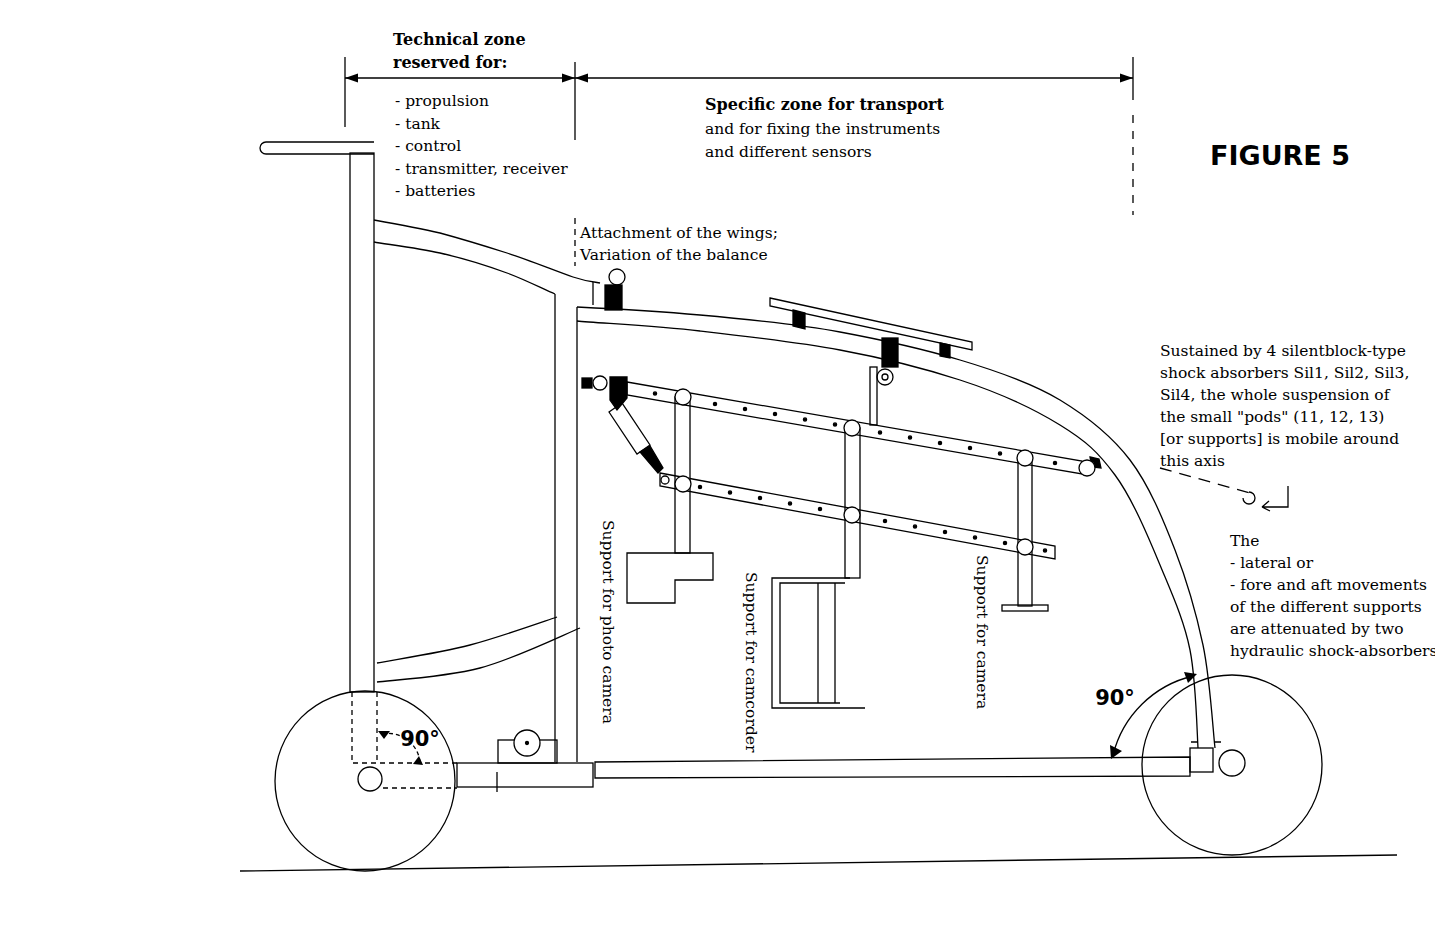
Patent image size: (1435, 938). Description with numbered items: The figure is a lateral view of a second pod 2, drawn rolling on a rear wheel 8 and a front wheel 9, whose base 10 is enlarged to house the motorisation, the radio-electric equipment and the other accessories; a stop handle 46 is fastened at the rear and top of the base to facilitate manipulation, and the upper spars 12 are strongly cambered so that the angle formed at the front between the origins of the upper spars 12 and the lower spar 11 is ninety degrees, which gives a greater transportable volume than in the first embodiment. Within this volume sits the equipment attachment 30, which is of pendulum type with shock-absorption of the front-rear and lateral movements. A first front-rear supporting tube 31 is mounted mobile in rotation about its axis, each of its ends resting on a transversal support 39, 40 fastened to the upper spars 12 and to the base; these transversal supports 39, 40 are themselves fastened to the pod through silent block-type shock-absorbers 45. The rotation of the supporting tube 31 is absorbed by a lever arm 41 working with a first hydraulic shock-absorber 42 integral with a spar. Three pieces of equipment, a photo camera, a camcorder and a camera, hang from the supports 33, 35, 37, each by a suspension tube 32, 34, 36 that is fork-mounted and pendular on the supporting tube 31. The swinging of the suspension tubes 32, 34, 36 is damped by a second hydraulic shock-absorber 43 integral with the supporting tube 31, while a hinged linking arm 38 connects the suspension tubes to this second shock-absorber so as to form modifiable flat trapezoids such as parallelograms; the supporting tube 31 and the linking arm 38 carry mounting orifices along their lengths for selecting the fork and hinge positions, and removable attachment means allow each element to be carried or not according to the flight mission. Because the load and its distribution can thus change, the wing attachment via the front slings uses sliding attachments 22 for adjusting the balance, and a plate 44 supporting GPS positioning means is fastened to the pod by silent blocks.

The vehicle frame with vertical mast 2 is at (324, 456).
The rear wheel 8 is at (322, 712).
The front wheel 9 is at (1247, 765).
The technical zone partition wall 10 is at (555, 470).
The lower support pod 11 is at (935, 757).
The upper spars 12 is at (1085, 429).
The sliding attachments 22 is at (630, 280).
The equipment attachment 30 is at (731, 355).
The first front-rear supporting tube 31 is at (750, 398).
The suspension tube 32 is at (687, 412).
The support 33 is at (712, 566).
The suspension tube 34 is at (857, 470).
The support 35 is at (832, 688).
The suspension tube 36 is at (1017, 502).
The support 37 is at (1042, 602).
The hinged linking arm 38 is at (948, 542).
The transversal support 39 is at (603, 375).
The transversal support 40 is at (1092, 472).
The lever arm 41 is at (885, 410).
The first hydraulic shock-absorber 42 is at (893, 378).
The second hydraulic shock-absorber 43 is at (624, 445).
The plate 44 is at (804, 301).
The silent block-type shock-absorbers 45 is at (806, 325).
The handlebar 46 is at (322, 152).